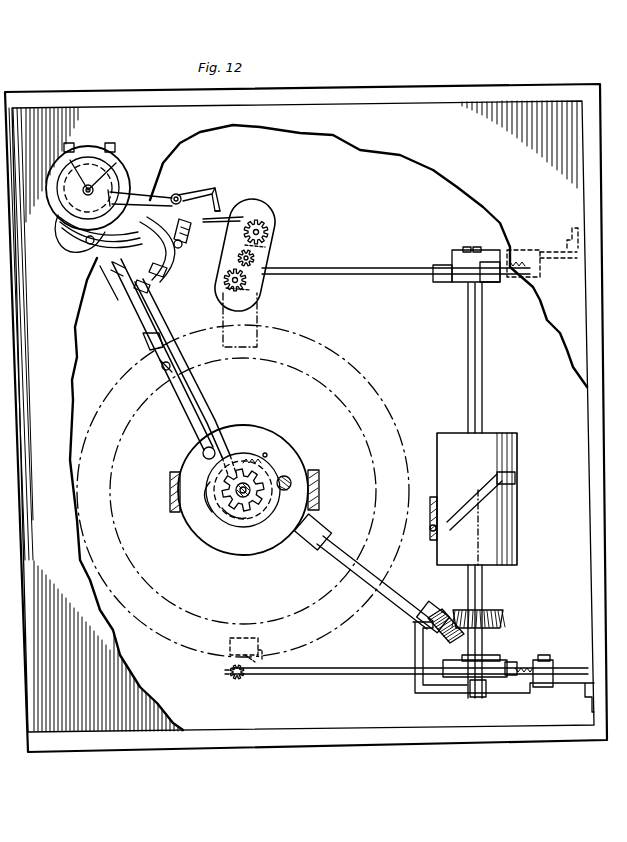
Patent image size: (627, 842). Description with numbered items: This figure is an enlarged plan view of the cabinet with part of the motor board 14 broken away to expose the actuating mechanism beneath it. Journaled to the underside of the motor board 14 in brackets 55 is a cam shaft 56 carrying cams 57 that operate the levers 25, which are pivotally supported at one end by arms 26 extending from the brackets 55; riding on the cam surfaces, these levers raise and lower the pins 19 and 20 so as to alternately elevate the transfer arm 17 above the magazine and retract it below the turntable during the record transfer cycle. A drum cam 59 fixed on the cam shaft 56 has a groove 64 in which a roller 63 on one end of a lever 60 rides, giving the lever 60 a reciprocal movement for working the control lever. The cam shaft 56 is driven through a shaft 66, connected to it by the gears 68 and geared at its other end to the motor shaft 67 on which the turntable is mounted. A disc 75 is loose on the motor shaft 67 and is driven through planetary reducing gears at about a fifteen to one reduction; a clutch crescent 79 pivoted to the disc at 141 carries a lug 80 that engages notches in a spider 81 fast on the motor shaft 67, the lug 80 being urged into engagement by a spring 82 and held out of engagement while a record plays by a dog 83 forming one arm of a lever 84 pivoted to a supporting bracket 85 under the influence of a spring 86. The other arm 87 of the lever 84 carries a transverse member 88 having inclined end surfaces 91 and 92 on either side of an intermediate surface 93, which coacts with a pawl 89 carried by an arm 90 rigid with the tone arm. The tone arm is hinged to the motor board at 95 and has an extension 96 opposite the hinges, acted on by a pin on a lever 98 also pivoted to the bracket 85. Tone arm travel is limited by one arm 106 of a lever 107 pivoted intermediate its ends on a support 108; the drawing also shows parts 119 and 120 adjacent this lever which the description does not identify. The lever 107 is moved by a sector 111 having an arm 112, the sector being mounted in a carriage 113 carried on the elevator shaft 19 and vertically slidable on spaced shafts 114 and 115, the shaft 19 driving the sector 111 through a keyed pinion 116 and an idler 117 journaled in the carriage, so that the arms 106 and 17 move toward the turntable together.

The motor board 14 is at (449, 177).
The hinge 95 is at (108, 145).
The extension 96 is at (72, 227).
The arm 90 is at (127, 250).
The arm 106 is at (157, 200).
The support 108 is at (177, 194).
The lever 107 is at (197, 186).
The bracket arm 120 is at (210, 190).
The bracket leg 119 is at (220, 197).
The arm 112 is at (233, 214).
The arm 17 is at (158, 223).
The member 88 is at (172, 255).
The end surface 91 is at (190, 233).
The pawl 89 is at (183, 243).
The intermediate surface 93 is at (162, 266).
The arm 87 is at (150, 287).
The lever 98 is at (117, 270).
The lever 84 is at (168, 328).
The end surface 92 is at (125, 290).
The supporting bracket 85 is at (148, 337).
The spring 86 is at (166, 367).
The dog 83 is at (223, 417).
The disc 75 is at (303, 467).
The spring 82 is at (250, 442).
The motor shaft 67 is at (245, 497).
The spider 81 is at (257, 475).
The pivot 141 is at (292, 483).
The clutch crescent 79 is at (207, 513).
The lug 80 is at (227, 523).
The shaft 66 is at (402, 602).
The gears 68 is at (453, 612).
The cam shaft 56 is at (489, 592).
The drum cam 59 is at (517, 538).
The groove 64 is at (515, 482).
The lever 60 is at (434, 498).
The roller 63 is at (434, 537).
The brackets 55 is at (493, 253).
The cams 57 is at (492, 281).
The levers 25 is at (387, 275).
The arms 26 is at (553, 673).
The shaft 115 is at (258, 224).
The sector 111 is at (270, 233).
The carriage 113 is at (277, 244).
The idler 117 is at (272, 251).
The shaft 114 is at (258, 264).
The pinion 116 is at (257, 288).
The elevator shaft 19 is at (227, 279).
The pin 20 is at (253, 667).